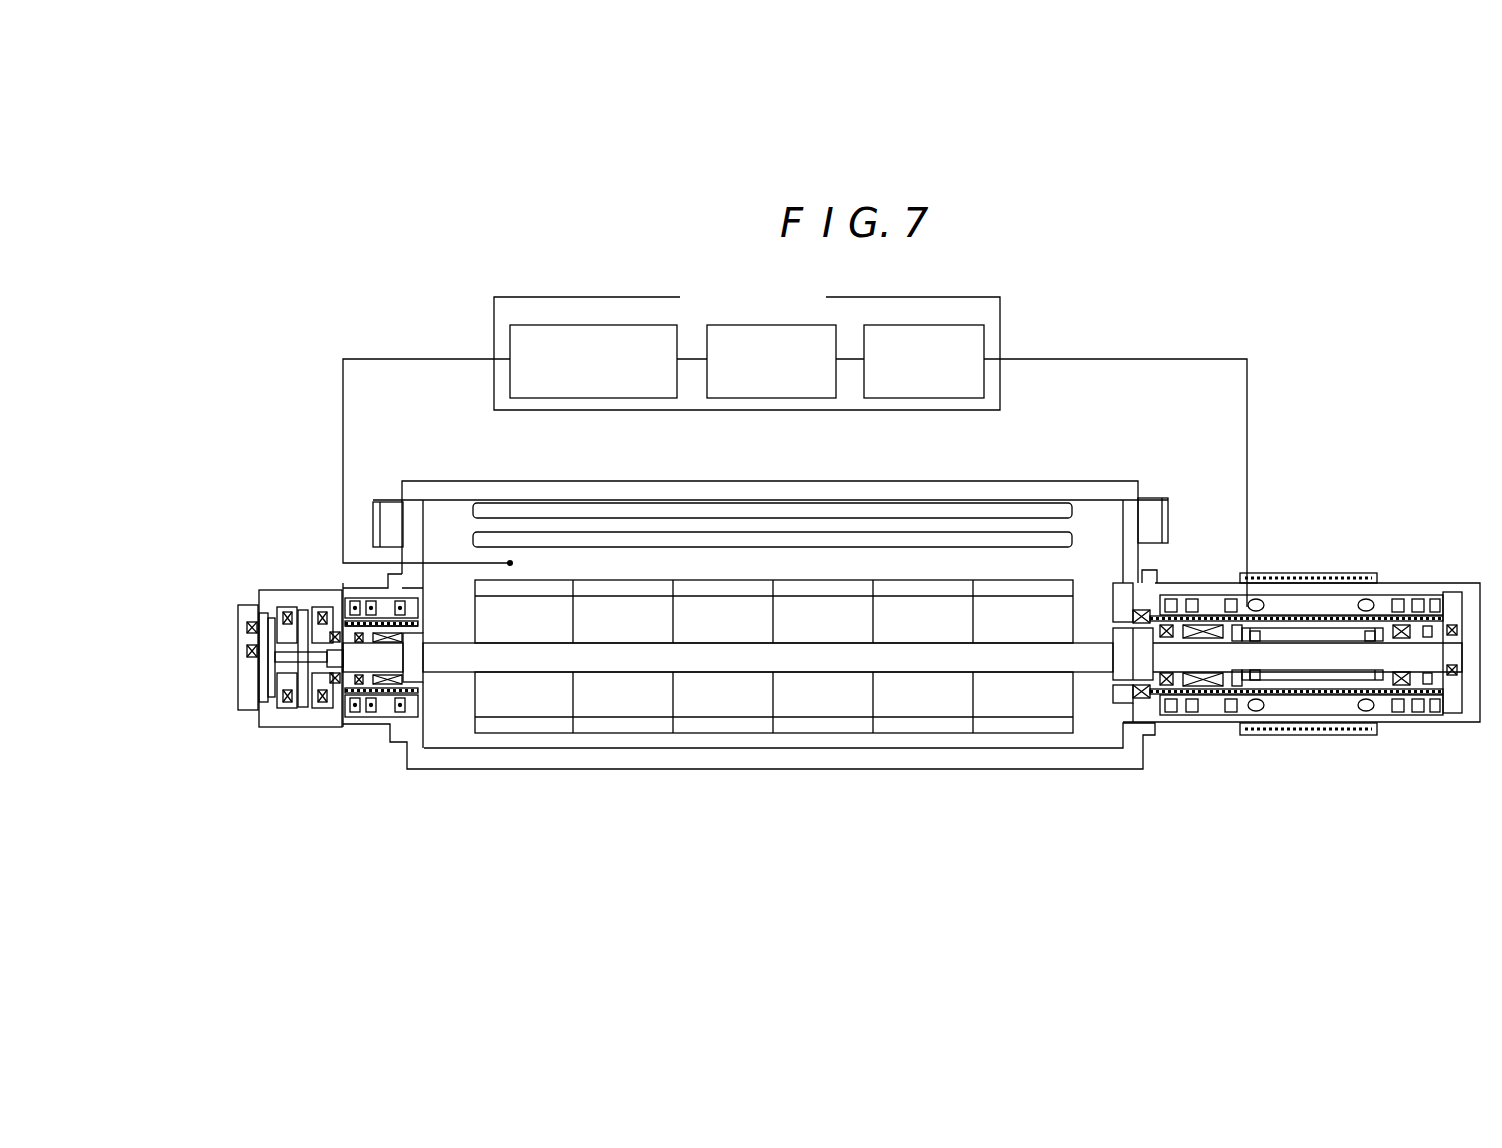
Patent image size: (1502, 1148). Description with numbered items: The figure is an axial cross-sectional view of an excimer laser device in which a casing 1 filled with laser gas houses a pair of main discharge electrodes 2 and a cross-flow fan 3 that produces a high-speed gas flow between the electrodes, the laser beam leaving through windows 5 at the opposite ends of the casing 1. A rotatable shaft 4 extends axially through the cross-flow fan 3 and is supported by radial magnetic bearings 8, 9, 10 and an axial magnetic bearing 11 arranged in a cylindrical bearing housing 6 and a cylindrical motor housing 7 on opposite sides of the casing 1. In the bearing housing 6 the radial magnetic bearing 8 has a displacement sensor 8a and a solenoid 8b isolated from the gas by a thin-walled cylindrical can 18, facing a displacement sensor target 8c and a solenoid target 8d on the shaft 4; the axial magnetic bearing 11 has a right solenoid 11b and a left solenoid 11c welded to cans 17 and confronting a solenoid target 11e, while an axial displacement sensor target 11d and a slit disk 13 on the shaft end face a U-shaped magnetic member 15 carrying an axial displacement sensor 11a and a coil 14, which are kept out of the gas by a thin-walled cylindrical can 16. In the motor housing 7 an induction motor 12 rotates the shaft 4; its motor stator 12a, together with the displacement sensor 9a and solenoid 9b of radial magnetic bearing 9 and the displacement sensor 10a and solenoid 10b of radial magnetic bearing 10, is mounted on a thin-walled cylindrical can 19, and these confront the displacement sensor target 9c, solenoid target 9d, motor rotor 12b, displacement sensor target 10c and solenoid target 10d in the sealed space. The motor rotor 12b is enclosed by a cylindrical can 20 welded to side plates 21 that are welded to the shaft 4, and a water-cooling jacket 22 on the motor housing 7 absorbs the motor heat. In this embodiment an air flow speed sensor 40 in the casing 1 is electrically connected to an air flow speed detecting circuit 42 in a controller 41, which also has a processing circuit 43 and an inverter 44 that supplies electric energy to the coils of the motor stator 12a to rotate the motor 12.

The casing 1 is at (712, 479).
The main discharge electrodes 2 is at (828, 503).
The cross-flow fan 3 is at (722, 720).
The rotatable shaft 4 is at (635, 655).
The windows 5 is at (390, 498).
The bearing housing 6 is at (328, 516).
The motor housing 7 is at (1328, 549).
The radial magnetic bearing 8 is at (372, 802).
The displacement sensor 8a is at (353, 713).
The solenoid 8b is at (383, 712).
The displacement sensor target 8c is at (345, 707).
The solenoid target 8d is at (413, 713).
The radial magnetic bearing 9 is at (1257, 789).
The displacement sensor 9a is at (1172, 700).
The solenoid 9b is at (1205, 705).
The displacement sensor target 9c is at (1155, 705).
The solenoid target 9d is at (1235, 705).
The radial magnetic bearing 10 is at (1312, 772).
The displacement sensor 10a is at (1430, 684).
The solenoid 10b is at (1390, 685).
The displacement sensor target 10c is at (1455, 680).
The solenoid target 10d is at (1310, 680).
The axial magnetic bearing 11 is at (365, 826).
The axial displacement sensor 11a is at (240, 705).
The right solenoid 11b is at (332, 710).
The left solenoid 11c is at (285, 710).
The axial displacement sensor target 11d is at (262, 710).
The solenoid target 11e is at (307, 710).
The induction motor 12 is at (1242, 822).
The motor stator 12a is at (1293, 695).
The motor rotor 12b is at (1330, 695).
The slit disk 13 is at (270, 607).
The coil 14 is at (250, 603).
The U-shaped magnetic member 15 is at (250, 603).
The thin-walled cylindrical can 16 is at (240, 646).
The thin-walled cylindrical cans 17 is at (300, 607).
The thin-walled cylindrical can 18 is at (424, 623).
The thin-walled cylindrical can 19 is at (1342, 600).
The cylindrical can 20 is at (1307, 626).
The side plates 21 is at (1237, 603).
The water-cooling jacket 22 is at (1265, 576).
The air flow speed sensor 40 is at (510, 560).
The controller 41 is at (1000, 314).
The air flow speed detecting circuit 42 is at (622, 398).
The processing circuit 43 is at (772, 398).
The inverter 44 is at (905, 398).